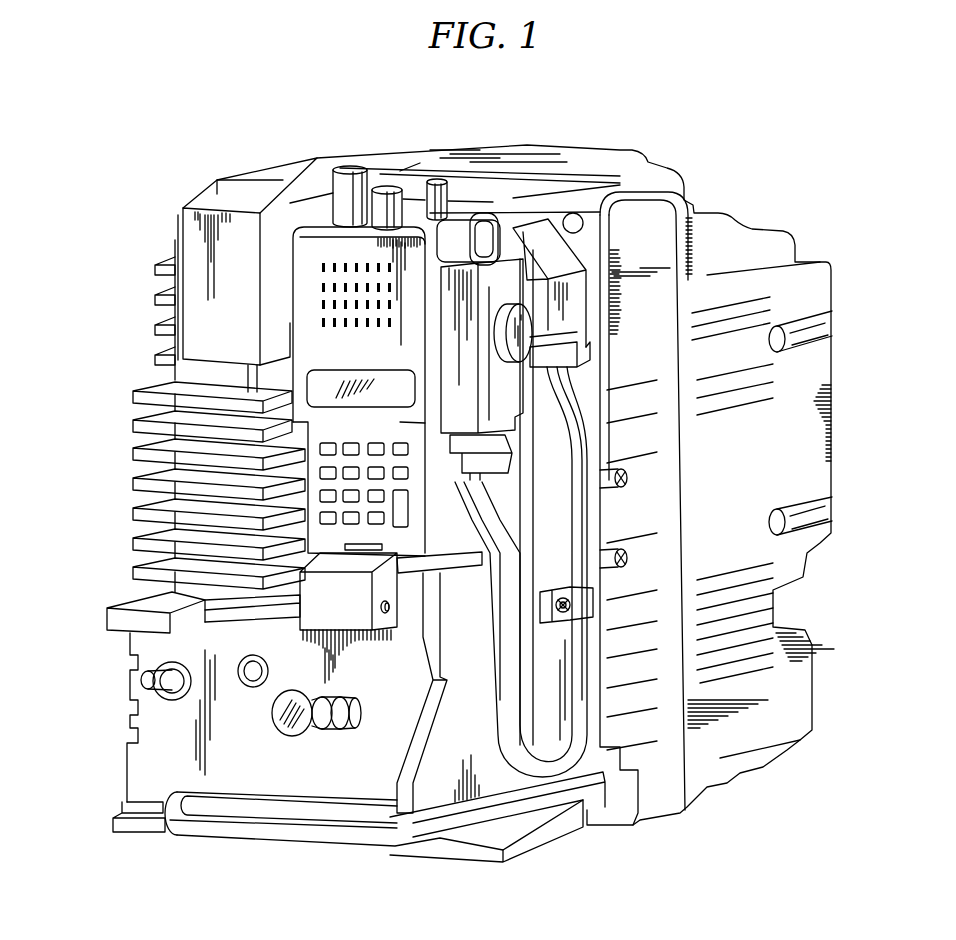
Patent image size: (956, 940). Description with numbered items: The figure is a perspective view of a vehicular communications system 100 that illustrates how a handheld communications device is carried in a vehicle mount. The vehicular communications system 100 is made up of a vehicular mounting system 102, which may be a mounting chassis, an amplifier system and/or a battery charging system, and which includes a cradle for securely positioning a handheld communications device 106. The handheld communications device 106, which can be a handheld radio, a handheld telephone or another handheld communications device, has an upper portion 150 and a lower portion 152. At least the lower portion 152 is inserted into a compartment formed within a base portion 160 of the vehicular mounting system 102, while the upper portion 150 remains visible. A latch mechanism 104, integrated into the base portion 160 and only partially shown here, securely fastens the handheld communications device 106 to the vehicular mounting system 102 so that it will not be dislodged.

The vehicular communications system 100 is at (675, 140).
The vehicular mounting system 102 is at (271, 167).
The latch mechanism 104 is at (355, 616).
The handheld communications device 106 is at (378, 364).
The upper portion 150 is at (295, 318).
The lower portion 152 is at (445, 602).
The base portion 160 is at (127, 762).